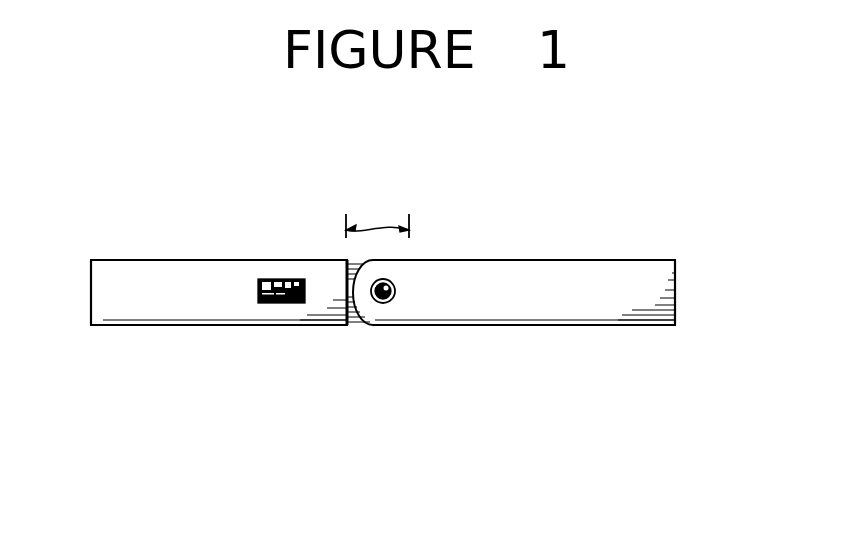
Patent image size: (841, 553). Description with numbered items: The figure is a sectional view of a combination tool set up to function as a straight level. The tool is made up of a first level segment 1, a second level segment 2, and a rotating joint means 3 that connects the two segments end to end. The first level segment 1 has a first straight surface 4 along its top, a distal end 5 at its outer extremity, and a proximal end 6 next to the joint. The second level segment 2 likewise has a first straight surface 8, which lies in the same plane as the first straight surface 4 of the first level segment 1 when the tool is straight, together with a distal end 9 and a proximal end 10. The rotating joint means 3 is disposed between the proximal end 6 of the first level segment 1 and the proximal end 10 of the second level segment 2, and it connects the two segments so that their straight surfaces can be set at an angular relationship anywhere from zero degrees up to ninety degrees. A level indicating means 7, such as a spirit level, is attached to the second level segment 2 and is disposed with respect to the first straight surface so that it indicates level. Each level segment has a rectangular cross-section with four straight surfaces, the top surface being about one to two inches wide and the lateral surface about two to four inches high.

The first level segment 1 is at (514, 292).
The second level segment 2 is at (219, 292).
The rotating joint means 3 is at (379, 229).
The first straight surface 4 is at (507, 259).
The distal end 5 is at (677, 290).
The proximal end 6 is at (372, 326).
The level indicating means 7 is at (283, 278).
The first straight surface 8 is at (152, 260).
The distal end 9 is at (90, 292).
The proximal end 10 is at (355, 326).